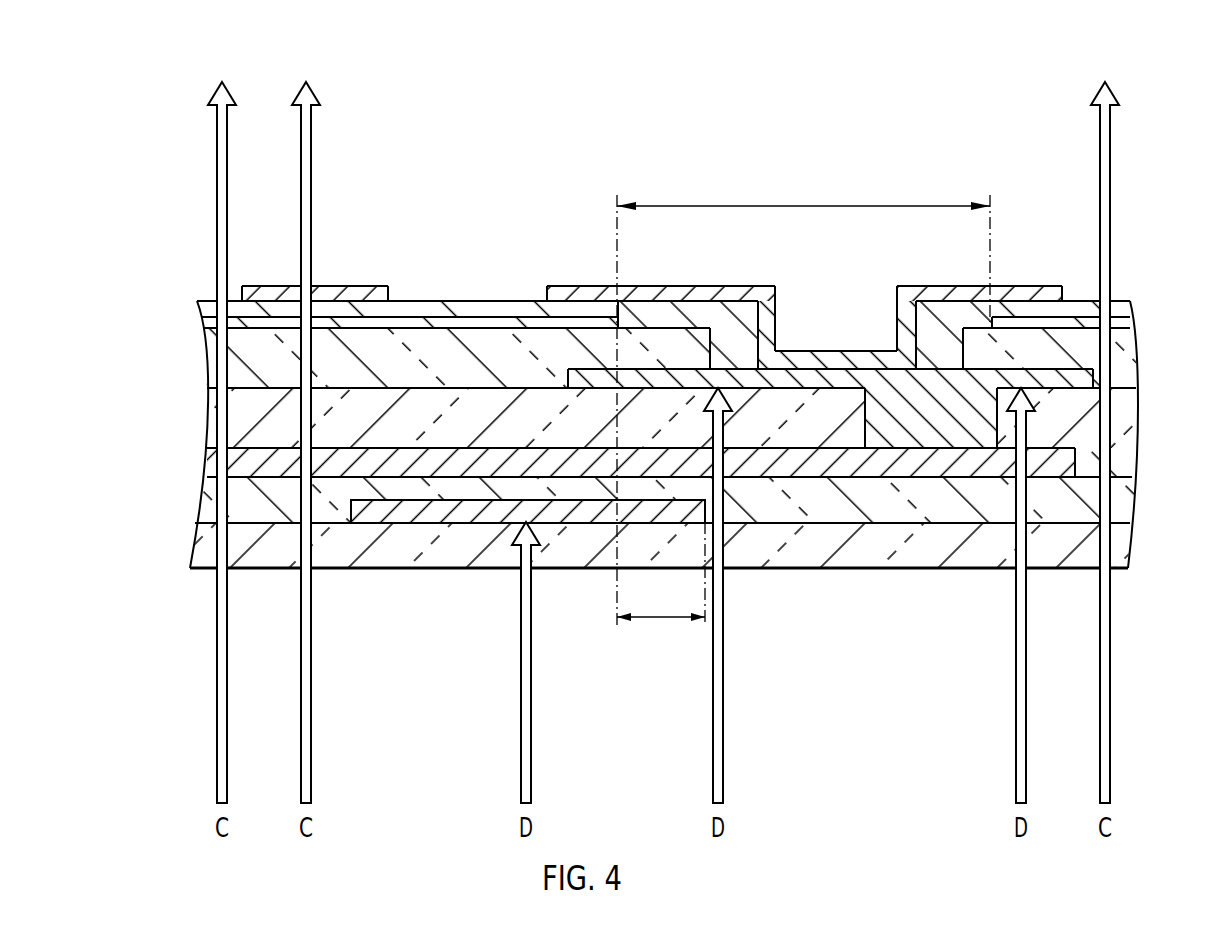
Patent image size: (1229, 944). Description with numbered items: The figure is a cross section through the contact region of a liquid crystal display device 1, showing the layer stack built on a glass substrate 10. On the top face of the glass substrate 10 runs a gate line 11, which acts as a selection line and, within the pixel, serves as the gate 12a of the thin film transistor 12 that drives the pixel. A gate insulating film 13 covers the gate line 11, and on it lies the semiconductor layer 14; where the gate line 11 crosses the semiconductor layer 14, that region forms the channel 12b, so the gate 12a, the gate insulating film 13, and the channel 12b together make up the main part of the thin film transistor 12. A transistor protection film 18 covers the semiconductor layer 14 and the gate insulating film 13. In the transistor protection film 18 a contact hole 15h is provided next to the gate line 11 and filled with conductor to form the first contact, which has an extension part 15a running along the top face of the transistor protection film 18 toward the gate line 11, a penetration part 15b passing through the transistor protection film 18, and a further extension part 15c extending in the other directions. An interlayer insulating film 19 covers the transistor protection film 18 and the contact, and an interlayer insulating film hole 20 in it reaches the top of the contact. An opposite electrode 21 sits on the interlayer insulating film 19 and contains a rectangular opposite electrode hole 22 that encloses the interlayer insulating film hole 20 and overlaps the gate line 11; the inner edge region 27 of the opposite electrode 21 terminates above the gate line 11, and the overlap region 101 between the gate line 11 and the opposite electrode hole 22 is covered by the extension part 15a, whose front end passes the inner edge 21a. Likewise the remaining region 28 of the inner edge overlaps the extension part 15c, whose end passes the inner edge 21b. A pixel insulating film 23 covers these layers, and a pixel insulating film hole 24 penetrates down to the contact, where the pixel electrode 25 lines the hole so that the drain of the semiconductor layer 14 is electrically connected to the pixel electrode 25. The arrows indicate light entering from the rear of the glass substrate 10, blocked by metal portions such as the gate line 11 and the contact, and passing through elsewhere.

The liquid crystal display device 1 is at (967, 47).
The glass substrate 10 is at (777, 565).
The gate line 11 is at (524, 565).
The thin film transistor 12 is at (552, 508).
The gate 12a is at (387, 507).
The channel 12b is at (477, 465).
The gate insulating film 13 is at (197, 500).
The semiconductor layer 14 is at (641, 352).
The extension part 15a is at (582, 385).
The penetration part 15b is at (920, 425).
The extension part 15c is at (1082, 380).
The contact hole 15h is at (862, 420).
The transistor protection film 18 is at (207, 405).
The interlayer insulating film 19 is at (207, 362).
The interlayer insulating film hole 20 is at (950, 342).
The opposite electrode 21 is at (393, 320).
The inner edge 21a is at (630, 322).
The inner edge 21b is at (990, 323).
The opposite electrode hole 22 is at (803, 397).
The pixel insulating film 23 is at (197, 303).
The pixel insulating film hole 24 is at (900, 330).
The pixel electrode 25 is at (322, 297).
The inner edge region 27 is at (570, 312).
The region 28 is at (1020, 322).
The overlap region 101 is at (661, 579).